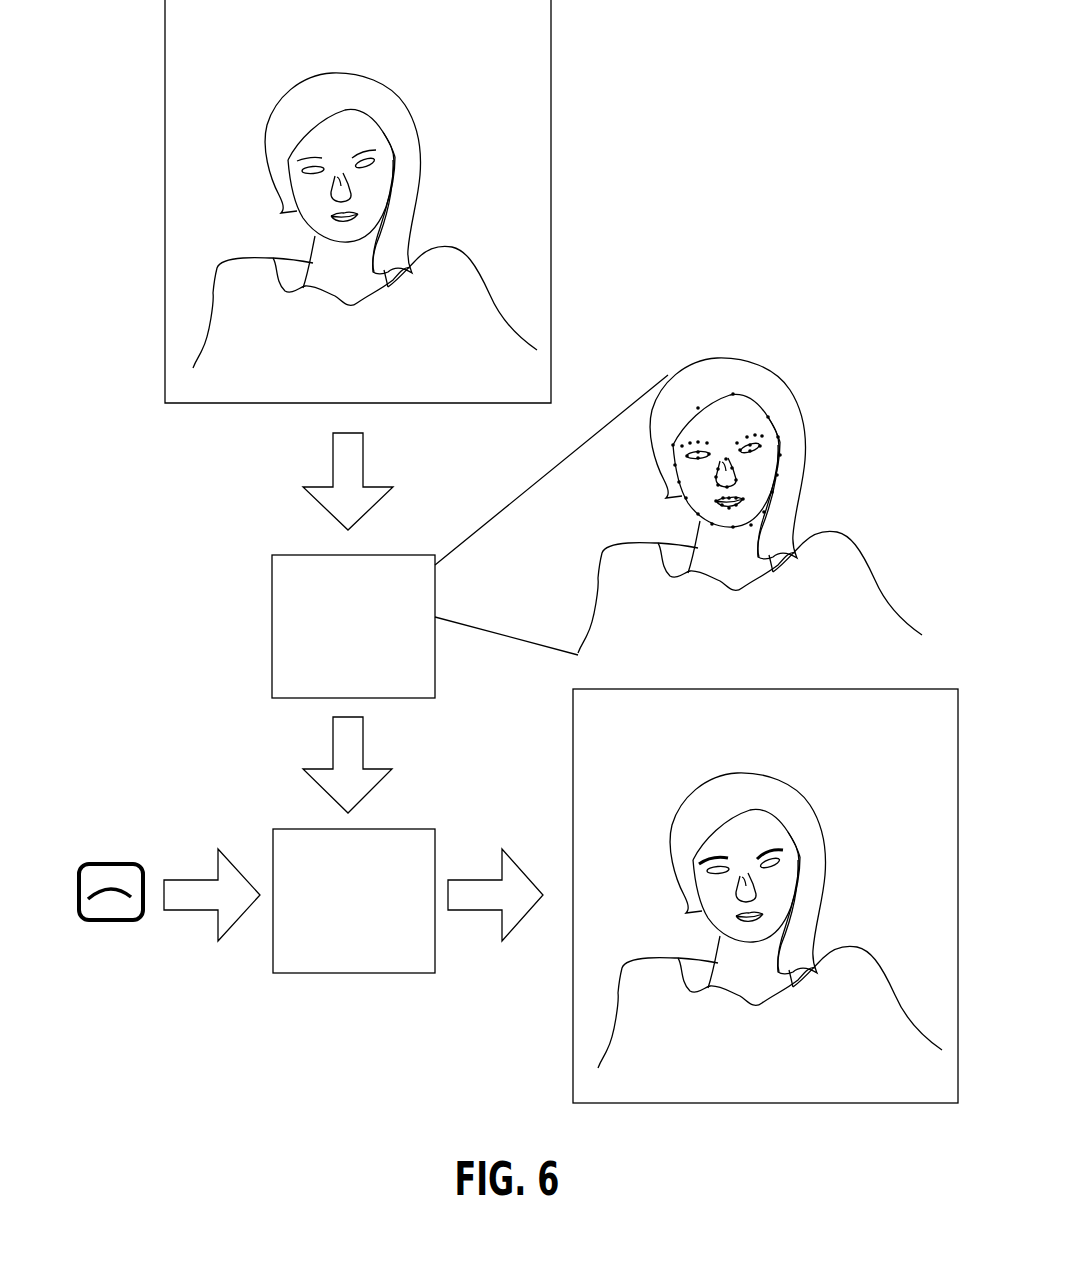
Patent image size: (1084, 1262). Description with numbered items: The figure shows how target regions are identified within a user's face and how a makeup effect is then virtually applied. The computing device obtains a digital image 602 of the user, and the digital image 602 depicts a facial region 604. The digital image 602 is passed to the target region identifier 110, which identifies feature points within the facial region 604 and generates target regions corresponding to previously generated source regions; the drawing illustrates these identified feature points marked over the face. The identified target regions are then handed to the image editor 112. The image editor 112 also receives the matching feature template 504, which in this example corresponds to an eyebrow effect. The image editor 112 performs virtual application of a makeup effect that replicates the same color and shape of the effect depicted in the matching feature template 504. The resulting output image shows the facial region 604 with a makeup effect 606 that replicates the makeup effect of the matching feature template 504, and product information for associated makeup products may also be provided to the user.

The digital image 602 is at (165, 32).
The facial region 604 is at (436, 82).
The target region identifier 110 is at (339, 681).
The image editor 112 is at (339, 924).
The matching feature template 504 is at (115, 862).
The makeup effect 606 is at (700, 860).